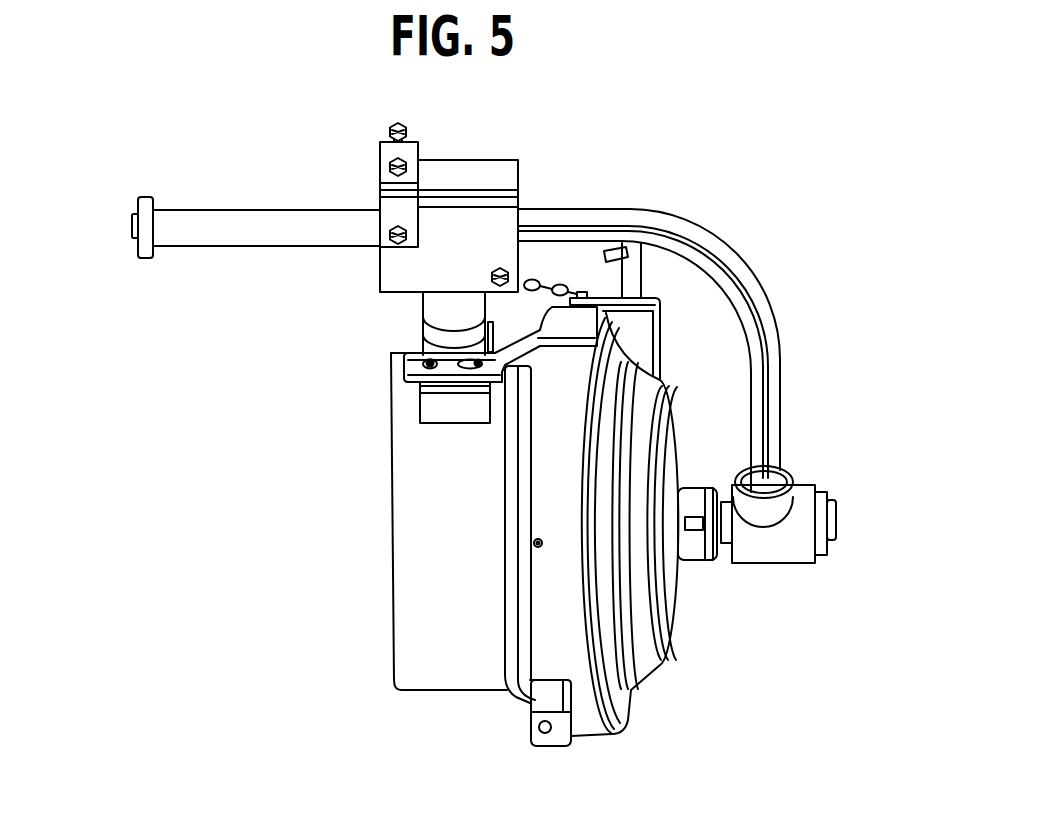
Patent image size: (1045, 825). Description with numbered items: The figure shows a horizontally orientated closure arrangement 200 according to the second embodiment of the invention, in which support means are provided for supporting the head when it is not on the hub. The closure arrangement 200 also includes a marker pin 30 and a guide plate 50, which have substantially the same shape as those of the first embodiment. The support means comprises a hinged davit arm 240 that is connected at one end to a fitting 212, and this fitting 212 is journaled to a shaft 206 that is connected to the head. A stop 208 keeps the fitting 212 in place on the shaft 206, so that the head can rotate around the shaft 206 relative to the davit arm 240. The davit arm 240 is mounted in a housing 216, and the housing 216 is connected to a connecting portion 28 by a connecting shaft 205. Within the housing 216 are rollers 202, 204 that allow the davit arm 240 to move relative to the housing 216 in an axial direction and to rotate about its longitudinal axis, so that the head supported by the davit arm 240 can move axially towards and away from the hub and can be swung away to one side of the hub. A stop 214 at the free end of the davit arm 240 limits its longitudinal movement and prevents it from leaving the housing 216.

The closure arrangement 200 is at (298, 130).
The stop 214 is at (132, 192).
The housing 216 is at (467, 153).
The roller 202 is at (377, 282).
The roller 204 is at (527, 273).
The connecting shaft 205 is at (460, 310).
The guide plate 50 is at (495, 370).
The connecting portion 28 is at (450, 413).
The marker pin 30 is at (532, 543).
The hinged davit arm 240 is at (743, 263).
The fitting 212 is at (797, 541).
The shaft 206 is at (722, 542).
The stop 208 is at (836, 506).